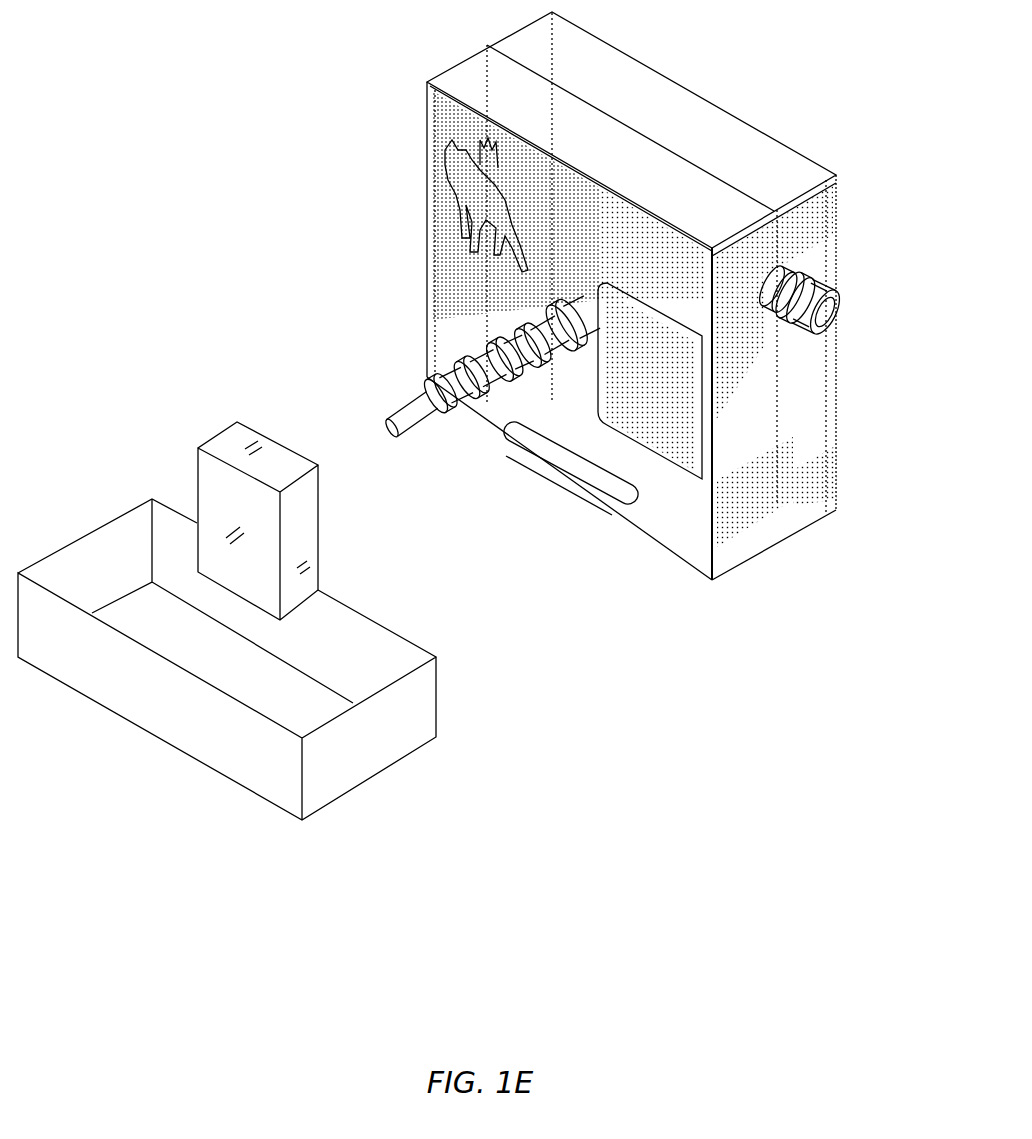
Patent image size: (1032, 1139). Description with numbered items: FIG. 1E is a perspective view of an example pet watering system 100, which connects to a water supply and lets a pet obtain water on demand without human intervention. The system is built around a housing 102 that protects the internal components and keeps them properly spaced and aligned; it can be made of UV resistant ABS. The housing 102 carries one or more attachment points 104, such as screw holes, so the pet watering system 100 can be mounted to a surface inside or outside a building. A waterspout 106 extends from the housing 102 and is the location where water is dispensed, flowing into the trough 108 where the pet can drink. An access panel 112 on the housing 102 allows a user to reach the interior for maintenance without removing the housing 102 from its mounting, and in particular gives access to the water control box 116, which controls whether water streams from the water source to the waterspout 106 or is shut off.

The pet watering system 100 is at (268, 80).
The housing 102 is at (748, 147).
The attachment point 104 is at (607, 487).
The waterspout 106 is at (383, 417).
The trough 108 is at (88, 566).
The access panel 112 is at (700, 430).
The water control box 116 is at (763, 385).